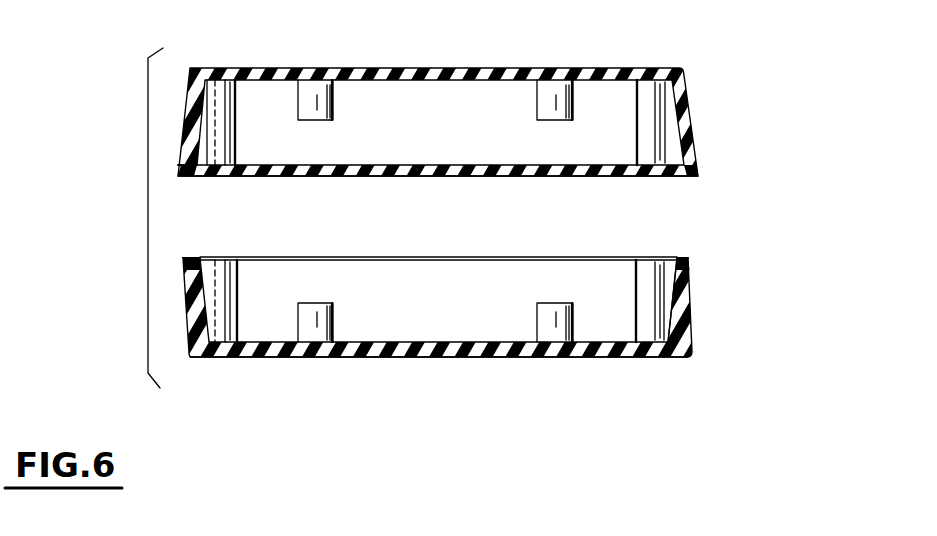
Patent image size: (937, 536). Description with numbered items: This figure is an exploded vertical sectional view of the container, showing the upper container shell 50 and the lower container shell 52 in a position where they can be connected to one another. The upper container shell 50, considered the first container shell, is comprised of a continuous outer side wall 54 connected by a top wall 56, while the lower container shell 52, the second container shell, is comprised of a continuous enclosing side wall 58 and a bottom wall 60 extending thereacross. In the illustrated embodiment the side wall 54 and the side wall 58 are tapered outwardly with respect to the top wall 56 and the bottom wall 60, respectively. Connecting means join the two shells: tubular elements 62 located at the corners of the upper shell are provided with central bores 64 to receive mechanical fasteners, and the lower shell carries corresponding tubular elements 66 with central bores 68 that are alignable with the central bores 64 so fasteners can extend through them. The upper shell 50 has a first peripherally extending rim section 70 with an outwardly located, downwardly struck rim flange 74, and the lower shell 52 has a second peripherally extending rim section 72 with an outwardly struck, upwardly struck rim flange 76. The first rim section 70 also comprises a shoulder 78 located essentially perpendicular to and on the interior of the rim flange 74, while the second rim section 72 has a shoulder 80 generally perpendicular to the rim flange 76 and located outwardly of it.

The upper container shell 50 is at (700, 37).
The lower container shell 52 is at (712, 333).
The outer side wall 54 is at (689, 108).
The top wall 56 is at (462, 68).
The enclosing side wall 58 is at (692, 290).
The bottom wall 60 is at (600, 357).
The tubular elements 62 is at (241, 86).
The central bores 64 is at (234, 151).
The tubular elements 66 is at (240, 280).
The central bores 68 is at (234, 316).
The first rim section 70 is at (162, 170).
The second rim section 72 is at (213, 250).
The rim flange 74 is at (698, 168).
The rim flange 76 is at (675, 262).
The shoulder 78 is at (193, 172).
The shoulder 80 is at (190, 258).